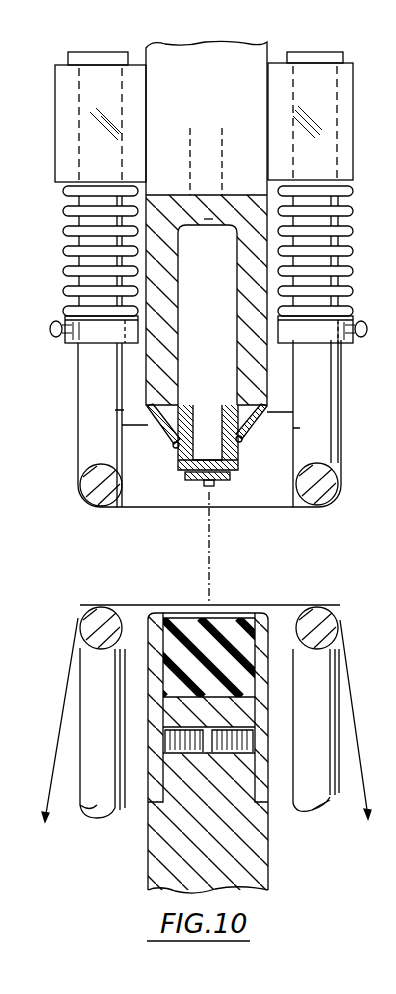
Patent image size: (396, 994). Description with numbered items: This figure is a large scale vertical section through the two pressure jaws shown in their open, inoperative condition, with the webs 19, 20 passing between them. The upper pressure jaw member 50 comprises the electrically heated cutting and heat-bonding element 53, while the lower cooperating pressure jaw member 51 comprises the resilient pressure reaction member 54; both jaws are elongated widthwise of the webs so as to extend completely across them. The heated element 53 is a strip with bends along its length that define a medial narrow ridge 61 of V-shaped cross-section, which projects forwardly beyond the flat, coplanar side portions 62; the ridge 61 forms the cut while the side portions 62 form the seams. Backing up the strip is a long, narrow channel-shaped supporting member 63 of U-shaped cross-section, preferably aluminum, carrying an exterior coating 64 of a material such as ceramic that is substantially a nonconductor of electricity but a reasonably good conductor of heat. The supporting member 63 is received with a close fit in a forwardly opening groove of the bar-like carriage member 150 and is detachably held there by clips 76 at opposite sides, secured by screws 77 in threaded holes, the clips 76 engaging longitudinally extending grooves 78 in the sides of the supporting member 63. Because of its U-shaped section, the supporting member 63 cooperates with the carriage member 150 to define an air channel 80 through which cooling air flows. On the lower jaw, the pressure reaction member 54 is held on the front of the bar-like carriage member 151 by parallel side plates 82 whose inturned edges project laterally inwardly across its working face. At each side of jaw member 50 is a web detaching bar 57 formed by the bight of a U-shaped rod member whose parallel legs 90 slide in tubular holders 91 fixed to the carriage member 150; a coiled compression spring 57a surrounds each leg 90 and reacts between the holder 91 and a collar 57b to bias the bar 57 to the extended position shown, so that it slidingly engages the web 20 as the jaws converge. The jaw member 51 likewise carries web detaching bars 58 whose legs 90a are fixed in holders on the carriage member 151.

The bar-like carriage member 150 is at (223, 89).
The bar-like carriage member 151 is at (223, 841).
The web 19 is at (290, 508).
The web 20 is at (56, 748).
The pressure jaw member 50 is at (272, 370).
The pressure jaw member 51 is at (271, 704).
The electrically heated cutting and heat-bonding element 53 is at (238, 544).
The resilient pressure reaction member 54 is at (270, 642).
The web detaching bar 57 is at (19, 330).
The coiled compression spring 57a is at (64, 230).
The collar 57b is at (64, 318).
The web detaching bar 58 is at (97, 623).
The medial narrow ridge 61 is at (208, 489).
The coplanar side portions 62 is at (190, 483).
The channel-shaped supporting member 63 is at (212, 406).
The exterior coating 64 is at (236, 465).
The clip 76 is at (124, 411).
The screw 77 is at (148, 426).
The longitudinally extending groove 78 is at (175, 447).
The air channel 80 is at (217, 280).
The side plate 82 is at (150, 666).
The leg 90 is at (80, 199).
The leg 90a is at (78, 812).
The tubular holder 91 is at (55, 73).